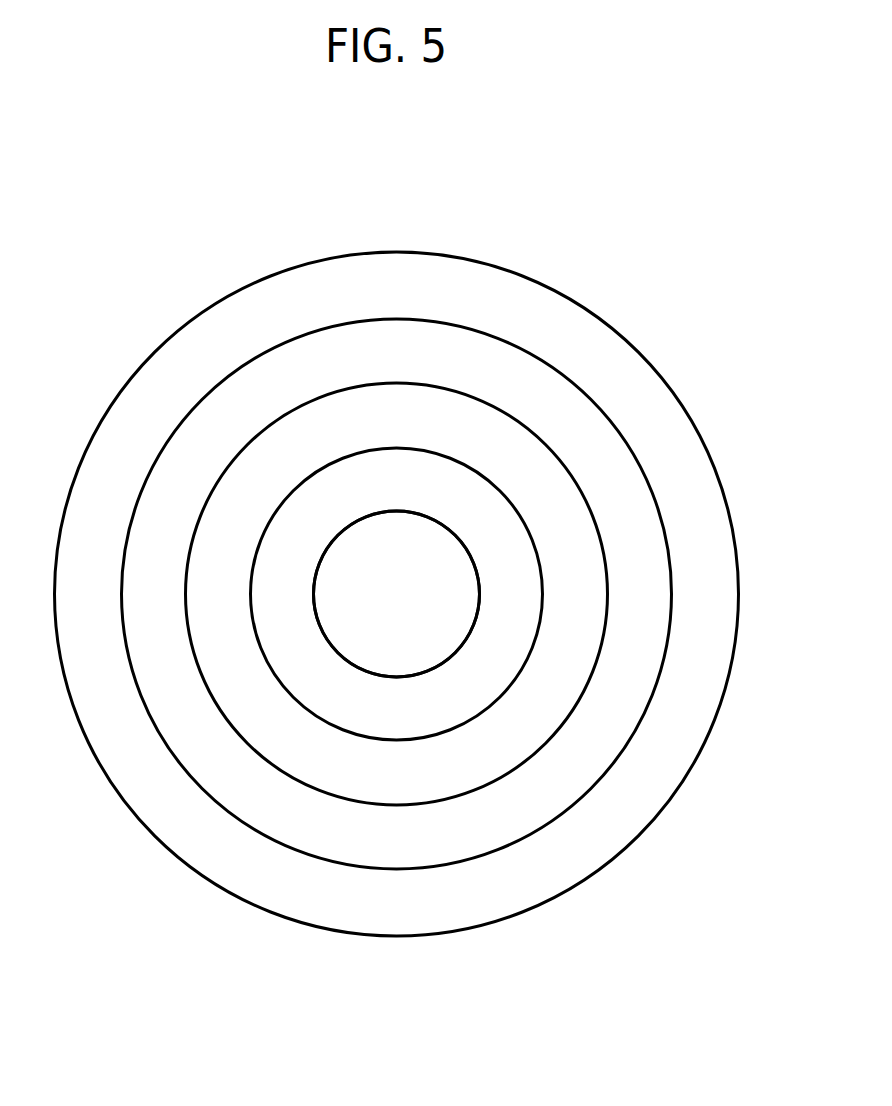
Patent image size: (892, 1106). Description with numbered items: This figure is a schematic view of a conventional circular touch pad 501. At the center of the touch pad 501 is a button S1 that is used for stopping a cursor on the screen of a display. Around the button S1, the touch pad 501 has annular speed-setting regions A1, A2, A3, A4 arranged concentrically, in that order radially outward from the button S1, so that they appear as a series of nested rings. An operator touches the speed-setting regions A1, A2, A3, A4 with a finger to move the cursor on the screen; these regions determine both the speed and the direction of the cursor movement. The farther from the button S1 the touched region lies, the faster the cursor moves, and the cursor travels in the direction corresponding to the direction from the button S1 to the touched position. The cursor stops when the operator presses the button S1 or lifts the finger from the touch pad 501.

The circular touch pad 501 is at (658, 370).
The button S1 is at (397, 594).
The speed-setting region A1 is at (419, 594).
The speed-setting region A2 is at (419, 594).
The speed-setting region A3 is at (418, 594).
The speed-setting region A4 is at (421, 594).